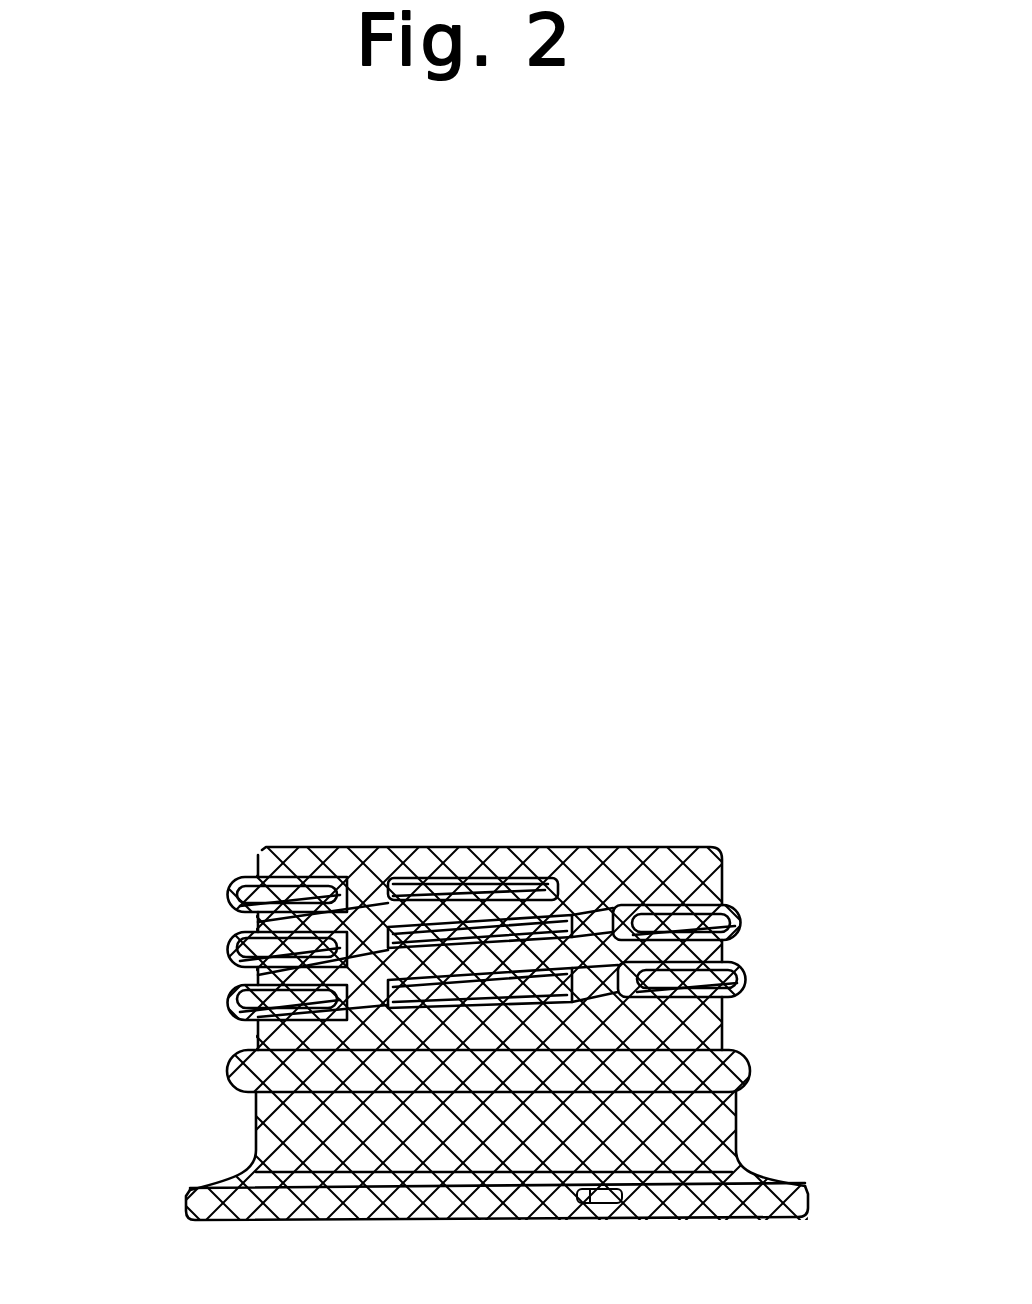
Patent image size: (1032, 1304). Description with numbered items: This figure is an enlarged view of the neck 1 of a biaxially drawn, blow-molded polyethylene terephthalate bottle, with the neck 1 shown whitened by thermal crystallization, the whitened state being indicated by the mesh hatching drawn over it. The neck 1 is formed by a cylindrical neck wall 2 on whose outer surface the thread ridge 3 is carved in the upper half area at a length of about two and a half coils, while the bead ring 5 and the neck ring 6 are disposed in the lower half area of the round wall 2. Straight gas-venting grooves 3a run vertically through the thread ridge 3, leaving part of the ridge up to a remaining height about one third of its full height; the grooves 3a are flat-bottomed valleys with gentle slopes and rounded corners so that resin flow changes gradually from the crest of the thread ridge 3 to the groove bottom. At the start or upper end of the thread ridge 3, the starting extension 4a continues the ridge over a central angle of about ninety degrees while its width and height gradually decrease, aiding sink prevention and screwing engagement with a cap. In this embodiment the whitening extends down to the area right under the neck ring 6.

The neck 1 is at (603, 830).
The cylindrical neck wall 2 is at (722, 1022).
The thread ridge 3 is at (228, 952).
The gas-venting groove 3a is at (600, 895).
The starting extension 4a is at (465, 878).
The bead ring 5 is at (227, 1077).
The neck ring 6 is at (806, 1193).